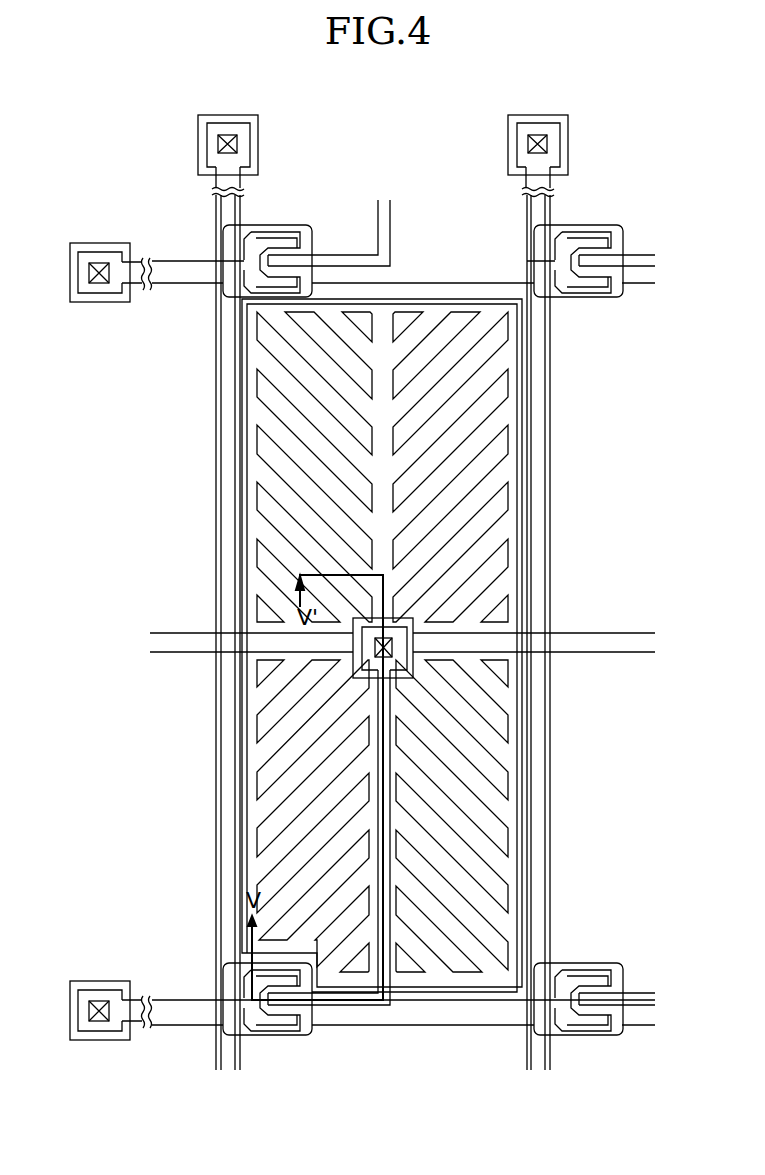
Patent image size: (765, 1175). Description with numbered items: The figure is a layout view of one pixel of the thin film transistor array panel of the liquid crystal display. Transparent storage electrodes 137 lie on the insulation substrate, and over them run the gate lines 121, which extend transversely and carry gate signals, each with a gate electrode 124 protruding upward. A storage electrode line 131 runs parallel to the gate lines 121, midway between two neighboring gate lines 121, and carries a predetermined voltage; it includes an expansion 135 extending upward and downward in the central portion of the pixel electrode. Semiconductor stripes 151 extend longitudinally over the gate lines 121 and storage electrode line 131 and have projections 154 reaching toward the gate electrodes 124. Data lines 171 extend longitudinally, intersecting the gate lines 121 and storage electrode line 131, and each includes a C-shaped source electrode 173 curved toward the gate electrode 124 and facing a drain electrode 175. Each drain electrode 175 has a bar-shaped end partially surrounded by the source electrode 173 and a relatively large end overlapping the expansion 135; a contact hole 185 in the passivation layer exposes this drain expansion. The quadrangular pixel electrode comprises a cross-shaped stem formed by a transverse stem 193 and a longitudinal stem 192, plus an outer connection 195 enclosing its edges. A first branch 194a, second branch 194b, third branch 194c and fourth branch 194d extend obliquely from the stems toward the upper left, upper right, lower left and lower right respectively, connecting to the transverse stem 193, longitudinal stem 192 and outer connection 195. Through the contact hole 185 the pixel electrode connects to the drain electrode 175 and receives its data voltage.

The gate line 121 is at (462, 1026).
The gate electrode 124 is at (263, 1038).
The storage electrode line 131 is at (617, 633).
The expansion 135 is at (401, 620).
The storage electrode 137 is at (522, 472).
The semiconductor stripe 151 is at (221, 505).
The projection 154 is at (313, 1008).
The data line 171 is at (216, 433).
The source electrode 173 is at (285, 1037).
The drain electrode 175 is at (402, 1006).
The contact hole 185 is at (392, 649).
The longitudinal stem 192 is at (385, 387).
The transverse stem 193 is at (443, 628).
The first branch 194a is at (305, 358).
The second branch 194b is at (480, 418).
The third branch 194c is at (295, 870).
The fourth branch 194d is at (465, 863).
The outer connection 195 is at (405, 308).